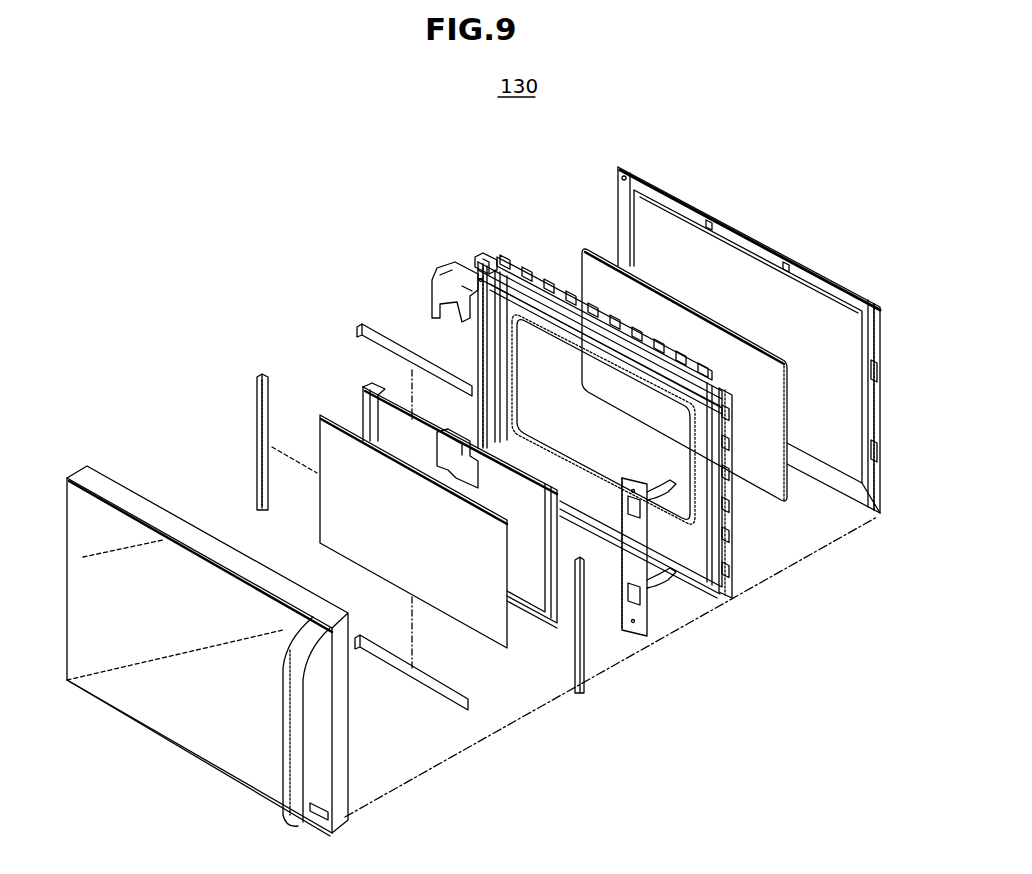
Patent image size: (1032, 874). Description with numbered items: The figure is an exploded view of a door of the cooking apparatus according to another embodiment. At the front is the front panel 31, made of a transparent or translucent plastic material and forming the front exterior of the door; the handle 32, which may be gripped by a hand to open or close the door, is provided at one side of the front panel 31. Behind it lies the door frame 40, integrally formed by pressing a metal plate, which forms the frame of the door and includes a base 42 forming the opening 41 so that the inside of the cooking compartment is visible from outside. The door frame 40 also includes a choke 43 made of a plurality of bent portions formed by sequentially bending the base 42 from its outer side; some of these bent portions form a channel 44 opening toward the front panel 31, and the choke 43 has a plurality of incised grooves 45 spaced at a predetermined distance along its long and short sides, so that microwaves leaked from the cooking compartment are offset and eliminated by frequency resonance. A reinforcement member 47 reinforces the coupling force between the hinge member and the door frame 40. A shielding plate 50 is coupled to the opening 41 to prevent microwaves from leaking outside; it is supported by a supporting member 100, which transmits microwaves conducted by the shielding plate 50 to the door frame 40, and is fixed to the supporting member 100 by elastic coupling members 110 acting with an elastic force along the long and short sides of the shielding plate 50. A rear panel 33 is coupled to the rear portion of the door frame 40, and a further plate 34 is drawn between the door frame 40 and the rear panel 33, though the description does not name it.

The front panel 31 is at (128, 712).
The handle 32 is at (300, 822).
The rear panel 33 is at (685, 190).
The light guide plate 34 is at (603, 268).
The door frame 40 is at (466, 250).
The opening 41 is at (513, 367).
The base 42 is at (520, 303).
The choke 43 is at (553, 293).
The channel 44 is at (488, 262).
The incised grooves 45 is at (733, 542).
The reinforcement member 47 is at (440, 272).
The shielding plate 50 is at (320, 413).
The supporting member 100 is at (367, 392).
The elastic coupling member 110 is at (257, 420).